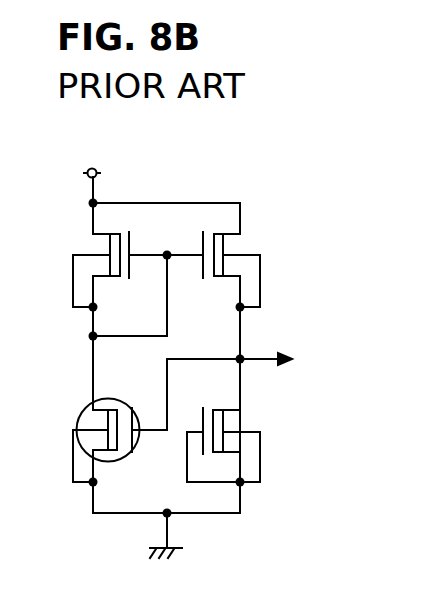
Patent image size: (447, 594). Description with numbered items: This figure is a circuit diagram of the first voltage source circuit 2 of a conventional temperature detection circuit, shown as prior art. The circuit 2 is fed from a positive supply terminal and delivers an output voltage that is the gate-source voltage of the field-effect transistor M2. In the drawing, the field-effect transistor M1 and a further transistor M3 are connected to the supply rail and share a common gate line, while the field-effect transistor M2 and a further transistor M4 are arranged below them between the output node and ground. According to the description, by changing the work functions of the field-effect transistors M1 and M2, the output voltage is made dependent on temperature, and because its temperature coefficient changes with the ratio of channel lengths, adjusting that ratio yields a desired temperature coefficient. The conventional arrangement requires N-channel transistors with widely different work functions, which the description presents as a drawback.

The first voltage source circuit 2 is at (283, 184).
The field-effect transistor M1 is at (112, 266).
The field-effect transistor M2 is at (98, 434).
The transistor M3 is at (239, 267).
The transistor M4 is at (230, 442).